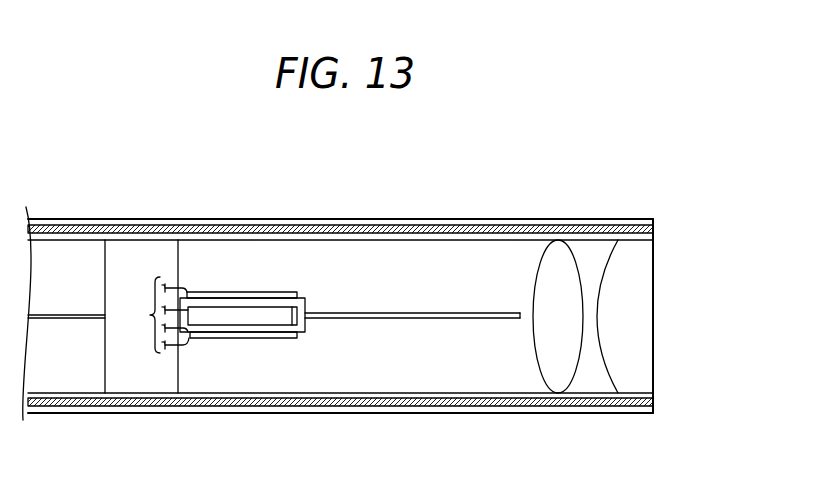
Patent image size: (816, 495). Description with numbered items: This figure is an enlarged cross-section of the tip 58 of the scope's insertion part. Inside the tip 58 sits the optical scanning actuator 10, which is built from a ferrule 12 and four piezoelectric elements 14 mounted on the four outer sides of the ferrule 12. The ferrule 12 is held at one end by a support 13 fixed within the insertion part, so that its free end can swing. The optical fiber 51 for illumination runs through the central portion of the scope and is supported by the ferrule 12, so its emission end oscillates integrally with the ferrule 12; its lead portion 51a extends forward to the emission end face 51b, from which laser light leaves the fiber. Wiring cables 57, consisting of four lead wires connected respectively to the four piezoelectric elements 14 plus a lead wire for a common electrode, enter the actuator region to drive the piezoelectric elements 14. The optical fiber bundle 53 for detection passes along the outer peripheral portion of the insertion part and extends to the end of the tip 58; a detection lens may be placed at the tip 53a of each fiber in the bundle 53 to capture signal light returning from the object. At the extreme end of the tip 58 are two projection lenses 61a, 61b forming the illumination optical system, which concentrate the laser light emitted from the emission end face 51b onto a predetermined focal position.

The optical scanning actuator 10 is at (249, 308).
The ferrule 12 is at (298, 333).
The support 13 is at (118, 348).
The piezoelectric elements 14 is at (247, 318).
The optical fiber for illumination 51 is at (58, 315).
The lead wire 51a is at (425, 319).
The emission end face 51b is at (521, 312).
The optical fiber bundle for detection 53 is at (362, 231).
The tip of each fiber in the optical fiber bundle for detection 53a is at (654, 229).
The wiring cables 57 is at (158, 315).
The tip of the insertion part 58 is at (212, 179).
The projection lens 61a is at (552, 360).
The projection lens 61b is at (620, 360).